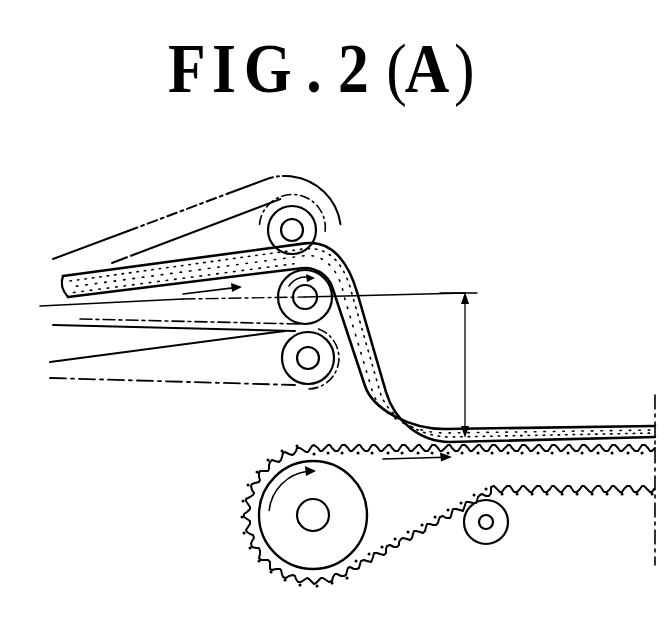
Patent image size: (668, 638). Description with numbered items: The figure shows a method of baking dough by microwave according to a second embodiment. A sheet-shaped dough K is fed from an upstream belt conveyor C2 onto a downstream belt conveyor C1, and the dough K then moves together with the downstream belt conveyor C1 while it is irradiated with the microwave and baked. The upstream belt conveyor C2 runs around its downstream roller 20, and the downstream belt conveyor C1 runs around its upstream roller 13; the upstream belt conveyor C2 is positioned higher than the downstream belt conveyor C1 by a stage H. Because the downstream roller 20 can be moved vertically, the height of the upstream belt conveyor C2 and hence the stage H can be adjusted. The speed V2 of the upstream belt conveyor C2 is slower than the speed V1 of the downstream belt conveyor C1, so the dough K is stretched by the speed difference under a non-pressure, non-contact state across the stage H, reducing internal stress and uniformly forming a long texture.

The downstream roller 20 is at (332, 285).
The upstream roller 13 is at (283, 548).
The dough K is at (573, 425).
The downstream belt conveyor C1 is at (584, 489).
The upstream belt conveyor C2 is at (157, 345).
The stage H is at (391, 365).
The speed of the downstream belt conveyor V1 is at (417, 477).
The speed of the upstream belt conveyor V2 is at (172, 309).